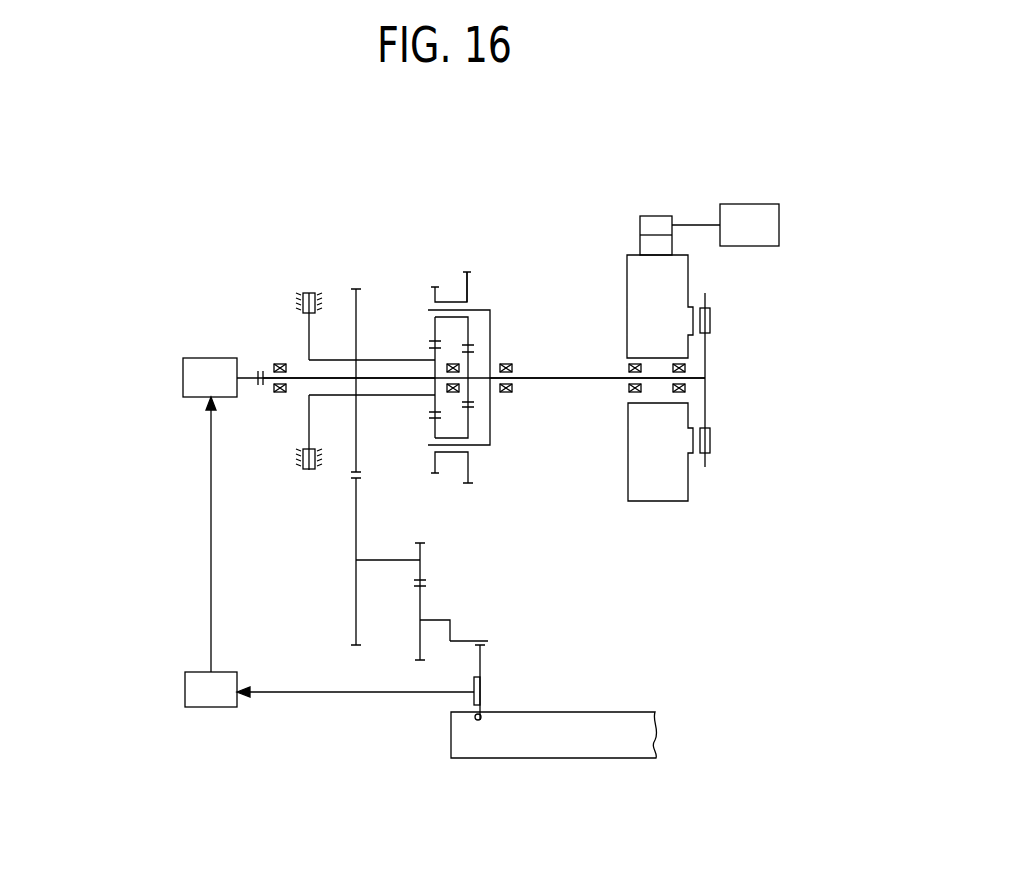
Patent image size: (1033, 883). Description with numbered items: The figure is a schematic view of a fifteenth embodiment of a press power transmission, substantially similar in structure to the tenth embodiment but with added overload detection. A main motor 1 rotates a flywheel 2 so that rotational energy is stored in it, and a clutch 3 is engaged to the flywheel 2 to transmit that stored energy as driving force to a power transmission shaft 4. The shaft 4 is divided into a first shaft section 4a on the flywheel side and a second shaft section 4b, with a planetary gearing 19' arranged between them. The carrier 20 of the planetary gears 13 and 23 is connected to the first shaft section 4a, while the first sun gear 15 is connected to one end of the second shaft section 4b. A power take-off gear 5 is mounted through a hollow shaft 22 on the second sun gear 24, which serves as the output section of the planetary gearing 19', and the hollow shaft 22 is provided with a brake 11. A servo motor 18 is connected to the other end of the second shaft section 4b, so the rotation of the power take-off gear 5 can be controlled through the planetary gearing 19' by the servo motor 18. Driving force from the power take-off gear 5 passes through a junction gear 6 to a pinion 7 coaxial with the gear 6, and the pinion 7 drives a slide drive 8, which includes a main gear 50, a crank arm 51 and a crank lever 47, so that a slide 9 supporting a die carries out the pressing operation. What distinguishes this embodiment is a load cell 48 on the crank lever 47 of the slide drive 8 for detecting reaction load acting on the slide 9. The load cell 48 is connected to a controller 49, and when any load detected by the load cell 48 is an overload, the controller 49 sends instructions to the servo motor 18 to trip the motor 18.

The main motor 1 is at (767, 228).
The flywheel 2 is at (672, 492).
The clutch 3 is at (713, 442).
The power transmission shaft 4 is at (595, 378).
The first shaft section 4a is at (565, 377).
The second shaft section 4b is at (305, 377).
The power take-off gear 5 is at (355, 312).
The junction gear 6 is at (356, 587).
The pinion 7 is at (423, 552).
The slide drive 8 is at (470, 617).
The slide 9 is at (600, 712).
The brake 11 is at (303, 293).
The planetary gear 13 is at (468, 288).
The first sun gear 15 is at (468, 385).
The servo motor 18 is at (198, 358).
The planetary gearing 19' is at (473, 374).
The carrier 20 is at (492, 327).
The hollow shaft 22 is at (390, 398).
The planetary gear 23 is at (445, 297).
The second sun gear 24 is at (433, 352).
The crank lever 47 is at (480, 665).
The load cell 48 is at (472, 697).
The controller 49 is at (197, 672).
The main gear 50 is at (420, 642).
The crank arm 51 is at (453, 630).